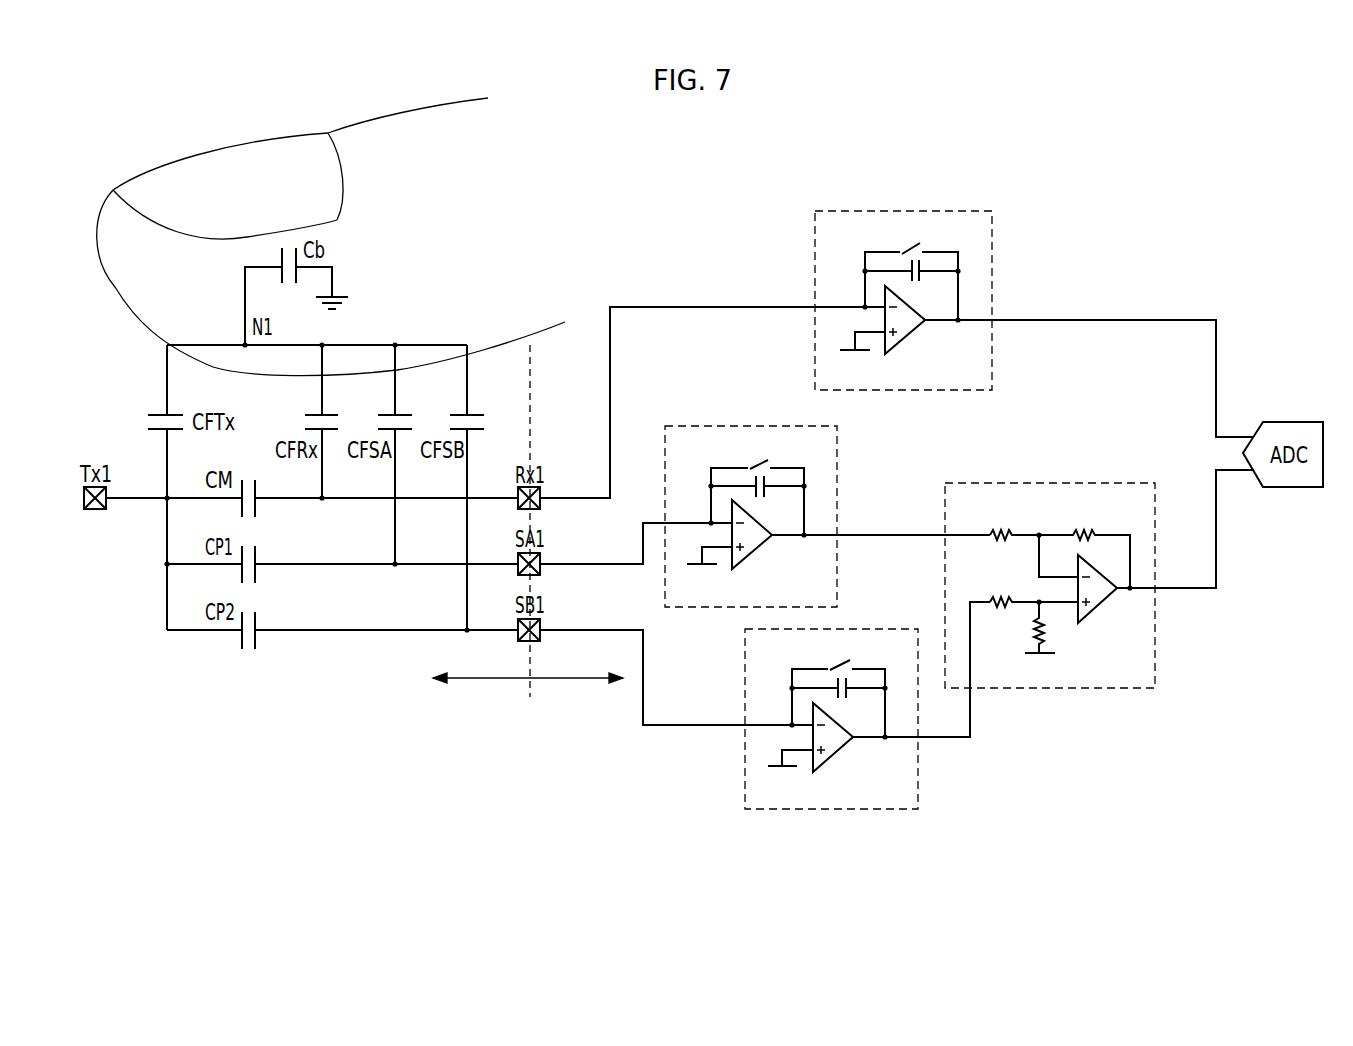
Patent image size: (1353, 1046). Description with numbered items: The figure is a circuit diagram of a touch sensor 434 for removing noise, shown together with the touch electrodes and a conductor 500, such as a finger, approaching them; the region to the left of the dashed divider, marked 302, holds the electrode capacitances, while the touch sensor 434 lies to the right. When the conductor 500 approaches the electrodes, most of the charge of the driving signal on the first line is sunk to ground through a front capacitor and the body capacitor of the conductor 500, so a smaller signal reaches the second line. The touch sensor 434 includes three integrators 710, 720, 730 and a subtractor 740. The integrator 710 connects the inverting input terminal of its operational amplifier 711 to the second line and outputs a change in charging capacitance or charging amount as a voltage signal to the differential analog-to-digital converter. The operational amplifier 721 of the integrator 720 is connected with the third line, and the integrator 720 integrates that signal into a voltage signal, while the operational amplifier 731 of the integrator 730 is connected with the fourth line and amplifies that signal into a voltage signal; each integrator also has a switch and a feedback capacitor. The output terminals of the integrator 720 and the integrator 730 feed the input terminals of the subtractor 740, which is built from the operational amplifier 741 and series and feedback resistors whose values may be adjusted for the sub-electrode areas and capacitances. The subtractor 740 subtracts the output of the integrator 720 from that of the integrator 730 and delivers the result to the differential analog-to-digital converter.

The conductor 500 is at (157, 163).
The touch sensor panel 302 is at (481, 666).
The touch sensor 434 is at (576, 666).
The integrator 710 is at (1034, 302).
The operational amplifier 711 is at (911, 335).
The integrator 720 is at (827, 495).
The operational amplifier 721 is at (754, 549).
The integrator 730 is at (867, 730).
The operational amplifier 731 is at (835, 755).
The subtractor 740 is at (1099, 606).
The operational amplifier 741 is at (1100, 606).